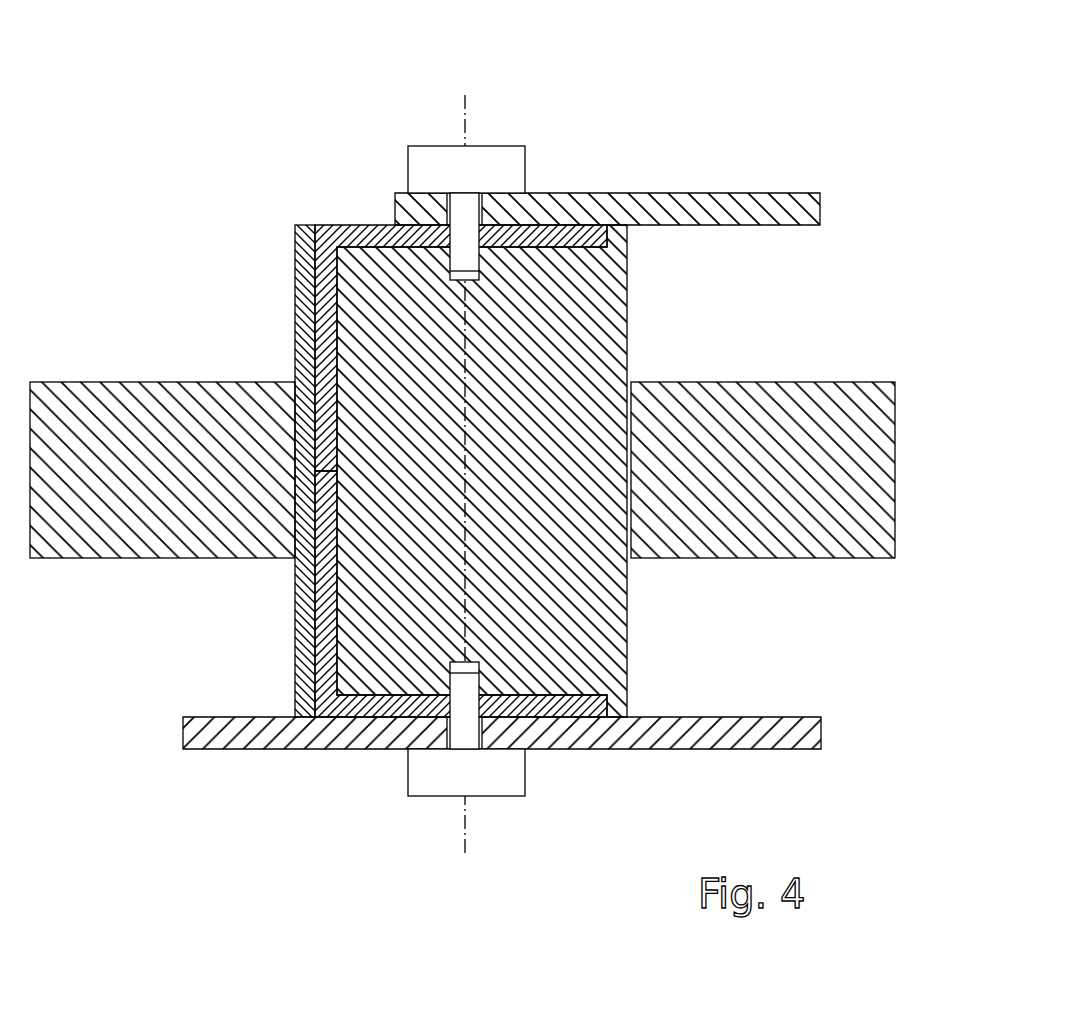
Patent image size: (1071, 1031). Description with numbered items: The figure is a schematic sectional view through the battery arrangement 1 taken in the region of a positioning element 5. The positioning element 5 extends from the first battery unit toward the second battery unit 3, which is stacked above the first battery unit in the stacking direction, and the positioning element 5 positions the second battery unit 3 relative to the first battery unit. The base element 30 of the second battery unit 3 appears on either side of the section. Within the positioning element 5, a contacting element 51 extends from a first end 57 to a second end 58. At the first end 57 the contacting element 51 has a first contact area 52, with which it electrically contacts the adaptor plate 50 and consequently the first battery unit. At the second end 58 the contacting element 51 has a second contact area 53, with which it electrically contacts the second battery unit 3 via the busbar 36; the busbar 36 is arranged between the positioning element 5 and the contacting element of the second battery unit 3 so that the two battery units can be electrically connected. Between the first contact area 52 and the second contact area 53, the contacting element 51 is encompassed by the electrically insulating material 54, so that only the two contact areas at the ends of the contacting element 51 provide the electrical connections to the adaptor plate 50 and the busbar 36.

The battery arrangement 1 is at (150, 148).
The second battery unit 3 is at (798, 83).
The positioning element 5 is at (271, 239).
The base element 30 is at (816, 400).
The busbar 36 is at (748, 194).
The adaptor plate 50 is at (754, 733).
The contacting element 51 is at (325, 320).
The first contact area 52 is at (362, 707).
The second contact area 53 is at (548, 228).
The electrically insulating material 54 is at (603, 338).
The first end 57 is at (582, 796).
The second end 58 is at (537, 101).